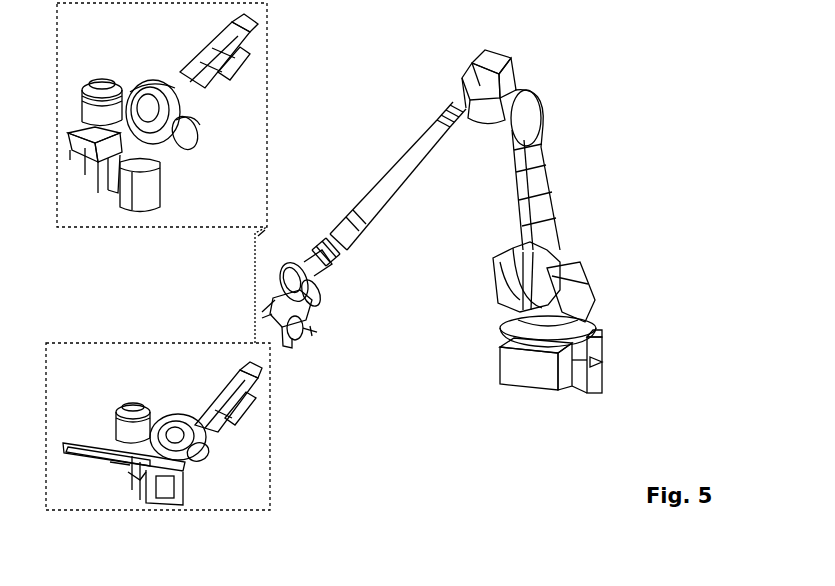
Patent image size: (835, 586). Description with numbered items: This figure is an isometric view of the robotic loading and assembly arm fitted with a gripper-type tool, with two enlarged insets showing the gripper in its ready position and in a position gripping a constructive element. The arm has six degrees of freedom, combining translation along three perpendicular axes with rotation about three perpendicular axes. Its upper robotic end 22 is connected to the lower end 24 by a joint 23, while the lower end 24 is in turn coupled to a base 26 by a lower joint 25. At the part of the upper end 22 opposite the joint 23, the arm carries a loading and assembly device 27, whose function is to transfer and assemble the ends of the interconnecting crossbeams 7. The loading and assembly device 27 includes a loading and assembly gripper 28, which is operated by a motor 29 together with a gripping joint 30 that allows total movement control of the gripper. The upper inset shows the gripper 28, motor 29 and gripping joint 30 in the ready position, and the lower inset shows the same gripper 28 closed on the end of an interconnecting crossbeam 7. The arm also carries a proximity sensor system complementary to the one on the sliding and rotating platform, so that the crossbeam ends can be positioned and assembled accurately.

The interconnecting crossbeam 7 is at (188, 465).
The upper robotic end 22 is at (400, 180).
The joint 23 is at (532, 112).
The lower end 24 is at (540, 202).
The lower joint 25 is at (556, 296).
The base 26 is at (518, 367).
The loading and assembly device 27 is at (238, 291).
The loading and assembly gripper 28 is at (87, 150).
The motor 29 is at (118, 80).
The gripping joint 30 is at (168, 117).